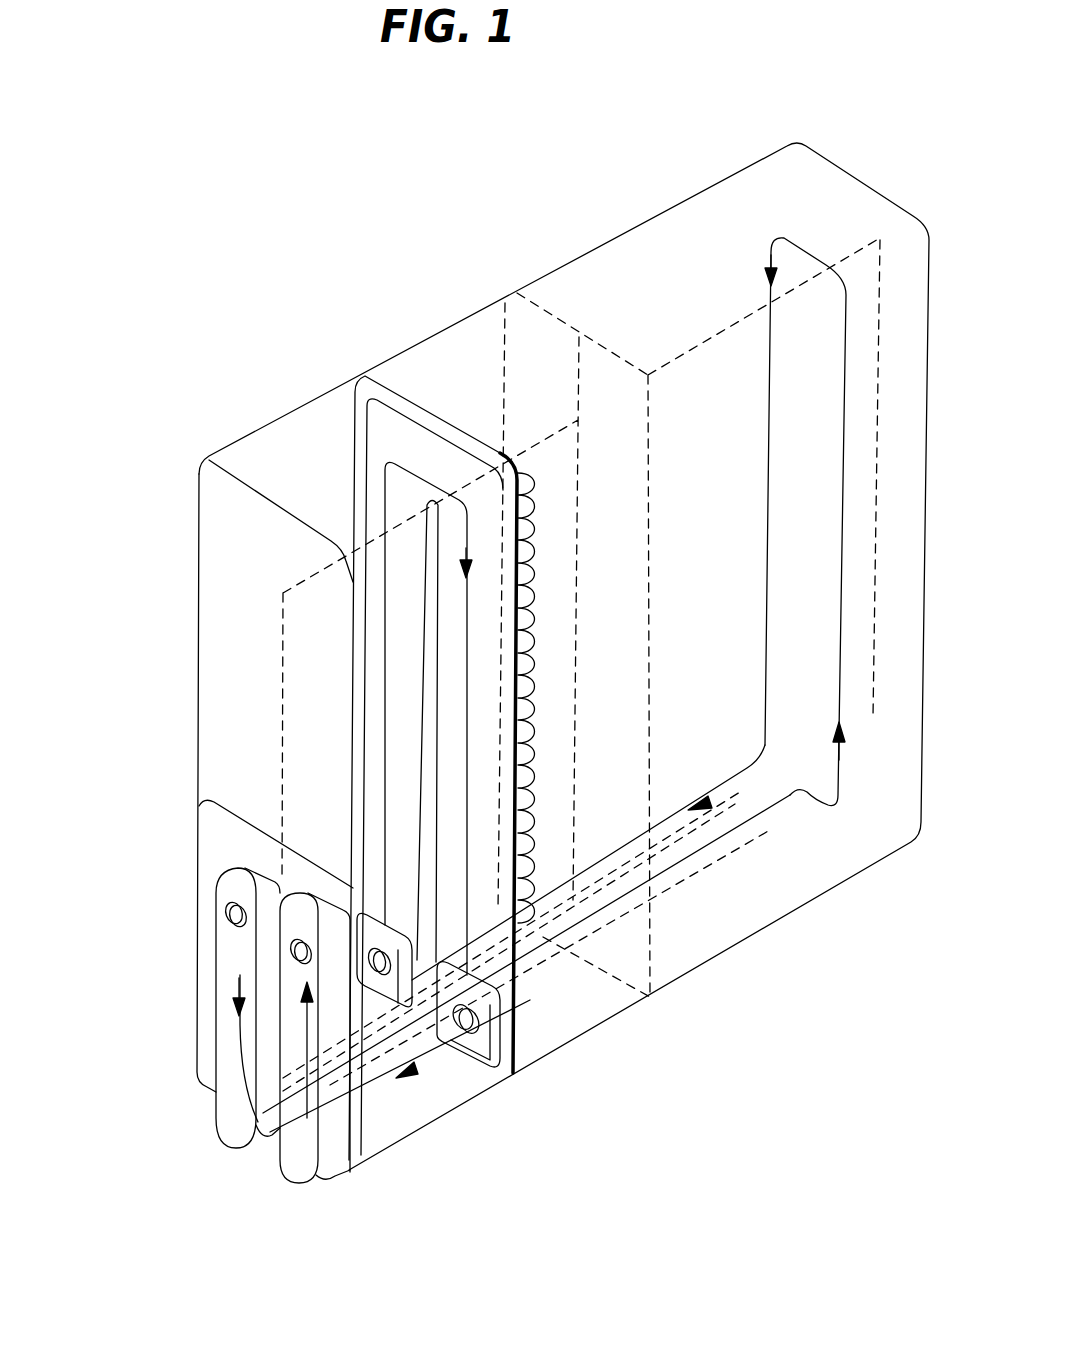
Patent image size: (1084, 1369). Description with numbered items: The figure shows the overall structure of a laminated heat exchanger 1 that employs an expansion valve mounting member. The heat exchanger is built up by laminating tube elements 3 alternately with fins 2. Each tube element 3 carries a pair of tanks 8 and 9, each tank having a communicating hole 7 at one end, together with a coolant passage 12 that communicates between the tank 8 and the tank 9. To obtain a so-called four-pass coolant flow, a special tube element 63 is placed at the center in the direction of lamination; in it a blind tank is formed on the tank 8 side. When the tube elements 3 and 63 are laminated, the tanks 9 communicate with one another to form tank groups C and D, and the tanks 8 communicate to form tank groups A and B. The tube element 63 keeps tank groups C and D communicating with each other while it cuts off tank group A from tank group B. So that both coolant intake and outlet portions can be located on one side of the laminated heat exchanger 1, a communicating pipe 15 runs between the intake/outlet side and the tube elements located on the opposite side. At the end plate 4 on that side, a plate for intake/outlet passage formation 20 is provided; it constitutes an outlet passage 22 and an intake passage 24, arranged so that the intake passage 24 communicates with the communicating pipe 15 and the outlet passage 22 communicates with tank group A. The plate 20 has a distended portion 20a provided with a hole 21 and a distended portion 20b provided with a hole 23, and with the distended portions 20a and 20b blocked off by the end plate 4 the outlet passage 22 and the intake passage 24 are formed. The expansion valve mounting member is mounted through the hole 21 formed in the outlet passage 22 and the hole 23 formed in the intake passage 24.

The laminated heat exchanger 1 is at (420, 285).
The fins 2 is at (537, 532).
The tube element 3 is at (410, 403).
The end plate 4 is at (222, 602).
The communicating hole 7 is at (360, 1035).
The tank 8 is at (470, 1063).
The tank 9 is at (387, 1035).
The coolant passage 12 is at (478, 484).
The communicating pipe 15 is at (707, 870).
The plate for intake/outlet passage formation 20 is at (222, 1039).
The distended portion 20a is at (298, 1170).
The distended portion 20b is at (232, 1133).
The hole 21 is at (290, 951).
The outlet passage 22 is at (305, 1182).
The hole 23 is at (224, 921).
The intake passage 24 is at (223, 1090).
The tube element 63 is at (653, 947).
The tank group A is at (595, 1030).
The tank group B is at (812, 880).
The tank group C is at (737, 800).
The tank group D is at (500, 933).